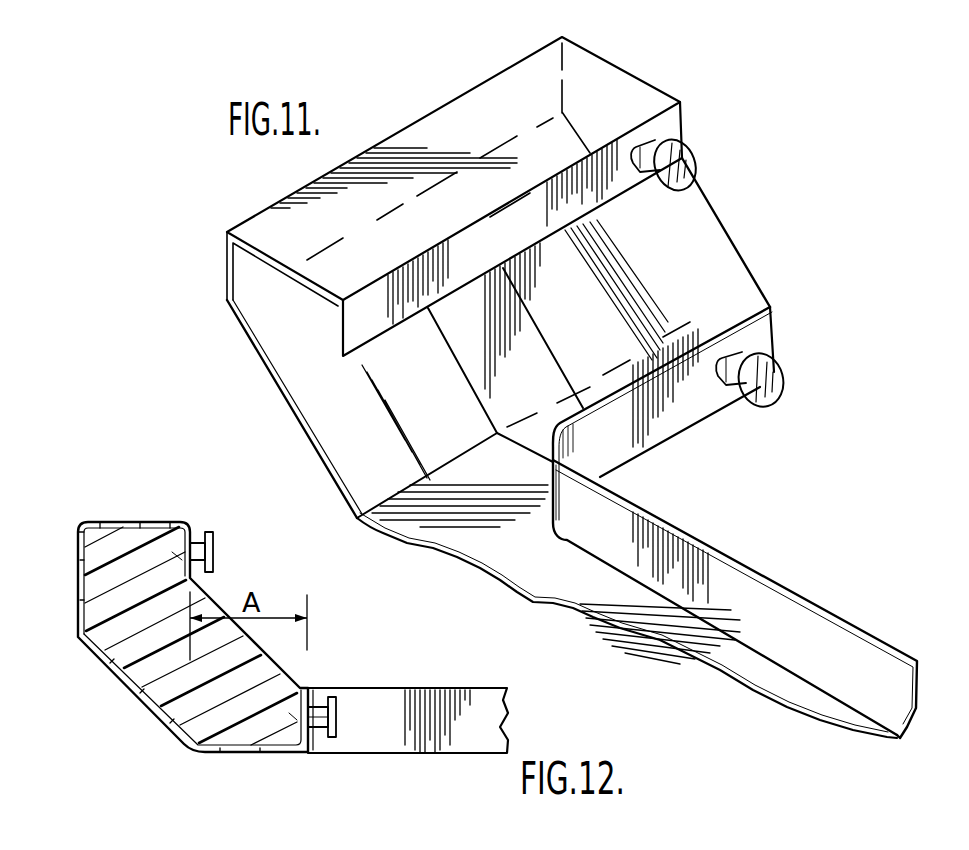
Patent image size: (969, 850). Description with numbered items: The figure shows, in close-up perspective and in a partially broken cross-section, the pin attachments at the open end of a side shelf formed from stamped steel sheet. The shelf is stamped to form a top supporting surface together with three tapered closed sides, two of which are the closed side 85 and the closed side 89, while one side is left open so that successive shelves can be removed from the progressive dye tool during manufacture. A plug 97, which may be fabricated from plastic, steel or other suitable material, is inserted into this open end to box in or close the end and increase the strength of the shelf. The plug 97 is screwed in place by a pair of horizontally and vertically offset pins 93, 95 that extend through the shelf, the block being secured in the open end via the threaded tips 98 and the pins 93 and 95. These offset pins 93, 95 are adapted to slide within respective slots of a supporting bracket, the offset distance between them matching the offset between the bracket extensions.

In FIG. 12, the tapered closed side 85 is at (150, 696).
In FIG. 11, the tapered closed side 89 is at (337, 413).
In FIG. 12, the tapered closed side 89 is at (191, 636).
In FIG. 11, the pin 93 is at (693, 152).
In FIG. 12, the pin 93 is at (213, 552).
In FIG. 11, the pin 95 is at (775, 378).
In FIG. 12, the pin 95 is at (337, 716).
In FIG. 11, the plug 97 is at (733, 240).
In FIG. 12, the plug 97 is at (262, 733).
In FIG. 12, the threaded tip 98 is at (178, 558).